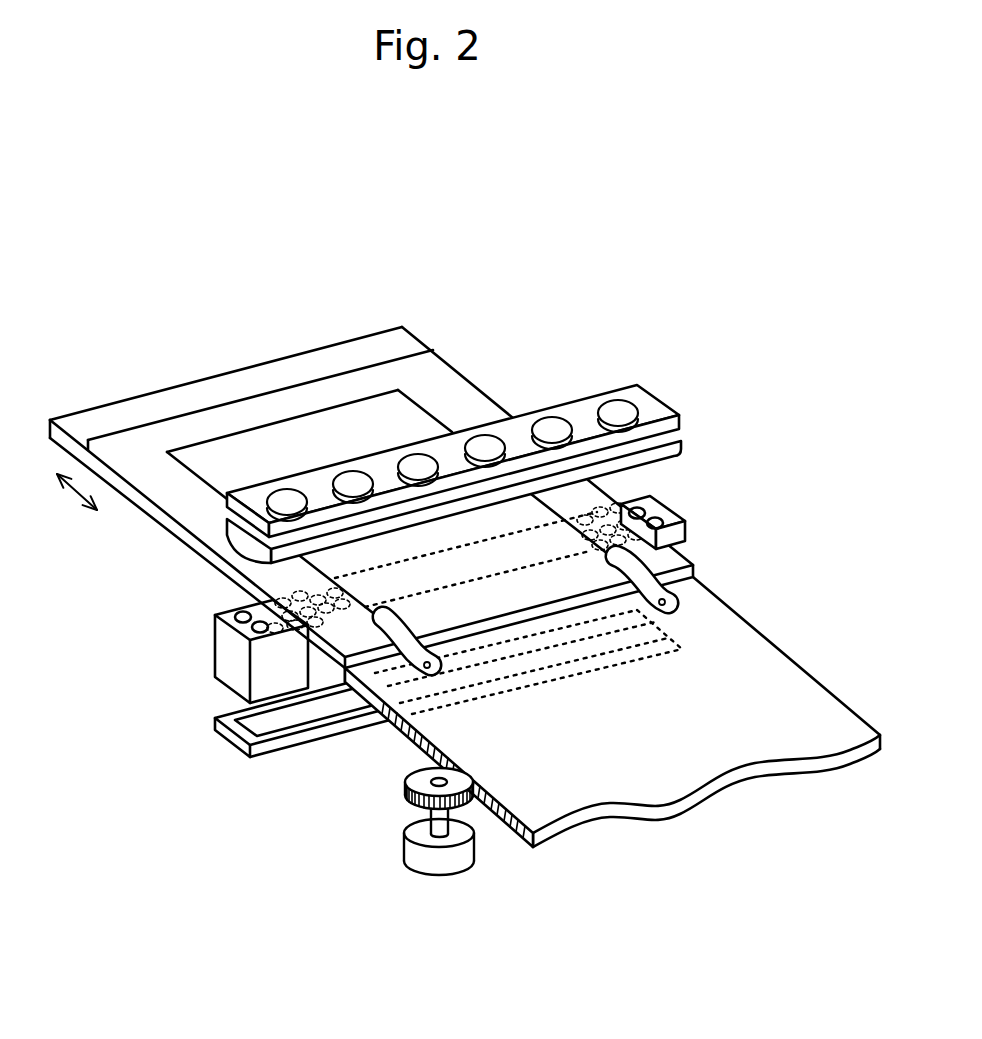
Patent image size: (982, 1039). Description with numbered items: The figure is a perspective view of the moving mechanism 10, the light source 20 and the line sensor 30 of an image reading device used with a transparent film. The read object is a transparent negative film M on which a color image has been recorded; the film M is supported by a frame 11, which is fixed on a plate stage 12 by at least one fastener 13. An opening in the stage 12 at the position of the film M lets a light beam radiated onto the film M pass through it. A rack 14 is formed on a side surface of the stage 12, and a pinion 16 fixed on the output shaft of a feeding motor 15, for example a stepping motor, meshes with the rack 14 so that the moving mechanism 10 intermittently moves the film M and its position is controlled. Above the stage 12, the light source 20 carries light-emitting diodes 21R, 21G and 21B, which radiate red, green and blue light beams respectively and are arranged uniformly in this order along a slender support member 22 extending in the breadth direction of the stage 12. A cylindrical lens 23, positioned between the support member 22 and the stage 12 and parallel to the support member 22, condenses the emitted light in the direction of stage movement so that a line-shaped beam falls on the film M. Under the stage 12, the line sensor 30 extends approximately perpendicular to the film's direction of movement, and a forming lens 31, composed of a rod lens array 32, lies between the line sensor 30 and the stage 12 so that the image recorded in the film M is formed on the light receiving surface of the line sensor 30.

The moving mechanism 10 is at (383, 853).
The frame 11 is at (190, 417).
The plate stage 12 is at (612, 736).
The fastener 13 is at (700, 587).
The rack 14 is at (517, 837).
The feeding motor 15 is at (440, 872).
The pinion 16 is at (420, 778).
The light source 20 is at (486, 432).
The light-emitting diode 21B is at (487, 437).
The light-emitting diode 21G is at (552, 420).
The light-emitting diode 21R is at (617, 405).
The support member 22 is at (657, 408).
The cylindrical lens 23 is at (673, 446).
The line sensor 30 is at (215, 733).
The forming lens 31 is at (670, 522).
The rod lens array 32 is at (215, 624).
The read object (film) M is at (293, 431).